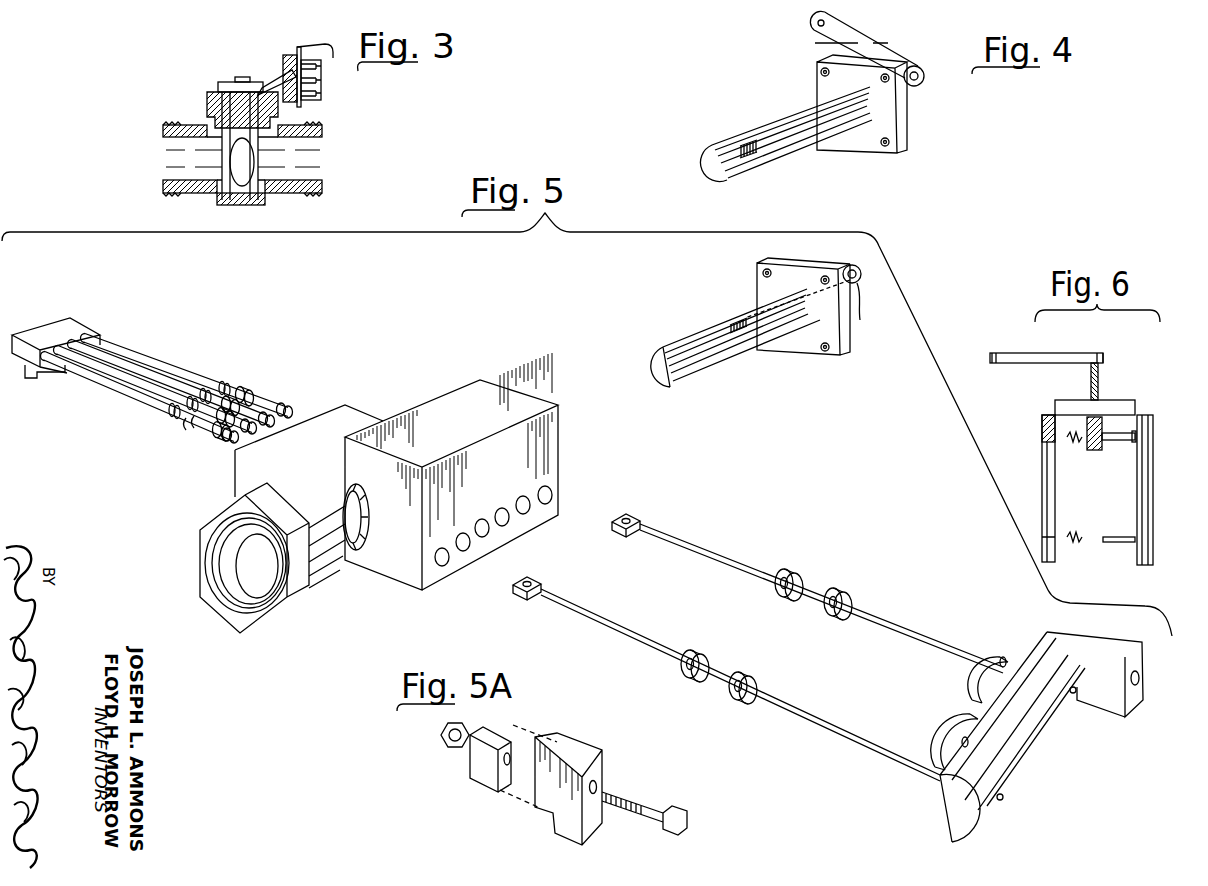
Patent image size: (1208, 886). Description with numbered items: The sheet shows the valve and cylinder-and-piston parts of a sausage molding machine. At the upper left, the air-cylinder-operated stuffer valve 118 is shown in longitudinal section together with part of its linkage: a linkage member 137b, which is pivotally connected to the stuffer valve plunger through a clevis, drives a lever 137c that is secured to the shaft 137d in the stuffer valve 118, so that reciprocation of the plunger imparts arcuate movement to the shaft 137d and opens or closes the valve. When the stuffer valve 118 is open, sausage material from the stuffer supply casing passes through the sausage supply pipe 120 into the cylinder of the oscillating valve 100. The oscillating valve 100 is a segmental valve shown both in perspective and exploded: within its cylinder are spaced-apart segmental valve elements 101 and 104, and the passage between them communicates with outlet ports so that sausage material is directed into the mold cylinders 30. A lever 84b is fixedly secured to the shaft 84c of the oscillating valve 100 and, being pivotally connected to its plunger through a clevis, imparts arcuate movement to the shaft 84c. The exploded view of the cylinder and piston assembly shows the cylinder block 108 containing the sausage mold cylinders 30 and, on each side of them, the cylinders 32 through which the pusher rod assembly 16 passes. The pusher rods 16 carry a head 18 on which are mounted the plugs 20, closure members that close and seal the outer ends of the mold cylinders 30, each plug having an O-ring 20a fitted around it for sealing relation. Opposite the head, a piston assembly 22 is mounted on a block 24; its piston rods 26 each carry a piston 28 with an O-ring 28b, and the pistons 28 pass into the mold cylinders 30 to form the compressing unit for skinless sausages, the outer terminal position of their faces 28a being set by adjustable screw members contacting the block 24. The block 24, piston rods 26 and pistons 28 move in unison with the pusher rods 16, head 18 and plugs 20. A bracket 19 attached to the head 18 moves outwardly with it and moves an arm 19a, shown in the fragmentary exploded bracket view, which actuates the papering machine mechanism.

In FIG. 3, the stuffer valve 118 is at (322, 180).
In FIG. 3, the linkage member 137b is at (323, 80).
In FIG. 3, the lever 137c is at (283, 82).
In FIG. 3, the shaft 137d is at (238, 77).
In FIG. 4, the oscillating valve 100 is at (780, 164).
In FIG. 5, the oscillating valve 100 is at (709, 374).
In FIG. 6, the oscillating valve 100 is at (1038, 470).
In FIG. 4, the segmental valve element 101 is at (740, 177).
In FIG. 5, the segmental valve element 101 is at (682, 380).
In FIG. 6, the segmental valve element 101 is at (1139, 553).
In FIG. 4, the segmental valve element 104 is at (713, 163).
In FIG. 5, the segmental valve element 104 is at (692, 328).
In FIG. 6, the segmental valve element 104 is at (1052, 514).
In FIG. 4, the lever 84b is at (897, 61).
In FIG. 5, the lever 84b is at (860, 265).
In FIG. 6, the lever 84b is at (1027, 364).
In FIG. 4, the shaft 84c is at (915, 88).
In FIG. 5, the shaft 84c is at (851, 285).
In FIG. 6, the shaft 84c is at (1100, 380).
In FIG. 5, the block 24 is at (74, 322).
In FIG. 5, the piston assembly 22 is at (176, 364).
In FIG. 5, the piston rods 26 is at (205, 386).
In FIG. 5, the piston 28 is at (241, 400).
In FIG. 5, the faces of pistons 28a is at (289, 409).
In FIG. 5, the O-ring 28b is at (200, 416).
In FIG. 5, the cylinder block 108 is at (516, 394).
In FIG. 5, the sausage supply pipe 120 is at (323, 557).
In FIG. 5, the sausage mold cylinders 30 is at (528, 514).
In FIG. 5, the cylinders 32 is at (553, 494).
In FIG. 5, the pusher rod assembly 16 is at (905, 640).
In FIG. 5, the head 18 is at (1028, 762).
In FIG. 5, the bracket 19 is at (1107, 705).
In FIG. 5A, the bracket 19 is at (514, 721).
In FIG. 5A, the arm 19a is at (600, 758).
In FIG. 5, the plugs 20 is at (988, 694).
In FIG. 5, the O-ring 20a is at (1003, 666).